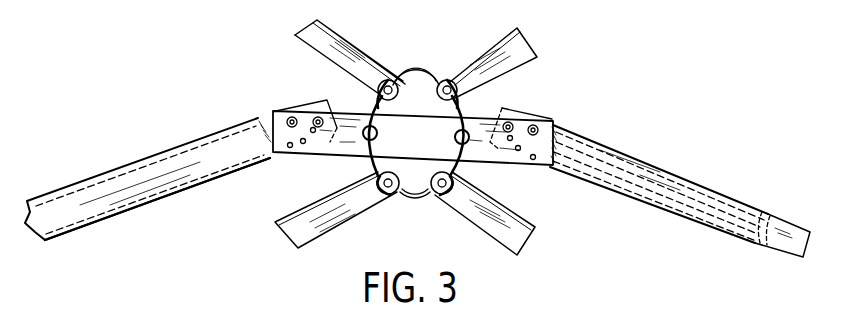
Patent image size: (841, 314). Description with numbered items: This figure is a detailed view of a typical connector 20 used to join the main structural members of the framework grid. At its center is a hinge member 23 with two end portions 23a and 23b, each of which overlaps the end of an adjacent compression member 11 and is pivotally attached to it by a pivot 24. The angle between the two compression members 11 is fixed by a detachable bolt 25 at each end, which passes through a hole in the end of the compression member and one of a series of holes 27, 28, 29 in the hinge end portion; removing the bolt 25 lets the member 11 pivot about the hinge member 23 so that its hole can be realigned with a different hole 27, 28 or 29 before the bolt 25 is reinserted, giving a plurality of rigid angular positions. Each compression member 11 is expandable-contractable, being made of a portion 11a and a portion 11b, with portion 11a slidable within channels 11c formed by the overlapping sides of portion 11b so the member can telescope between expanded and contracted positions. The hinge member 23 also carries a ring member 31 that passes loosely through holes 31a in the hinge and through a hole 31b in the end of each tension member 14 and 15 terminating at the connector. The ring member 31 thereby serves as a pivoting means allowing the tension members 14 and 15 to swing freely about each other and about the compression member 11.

The compression member 11 is at (133, 158).
The portion of compression member 11a is at (265, 113).
The portion of compression member 11b is at (165, 205).
The channels 11c is at (762, 248).
The tension member 14 is at (300, 42).
The tension member 15 is at (525, 46).
The connector 20 is at (403, 48).
The hinge member 23 is at (473, 153).
The end portion of hinge member 23a is at (275, 110).
The end portion of hinge member 23b is at (555, 120).
The pivot 24 is at (289, 117).
The detachable bolt 25 is at (318, 117).
The hole 27 is at (290, 148).
The hole 28 is at (302, 144).
The hole 29 is at (313, 133).
The ring member 31 is at (425, 72).
The holes in hinge 31a is at (455, 139).
The hole in tension member end 31b is at (440, 95).